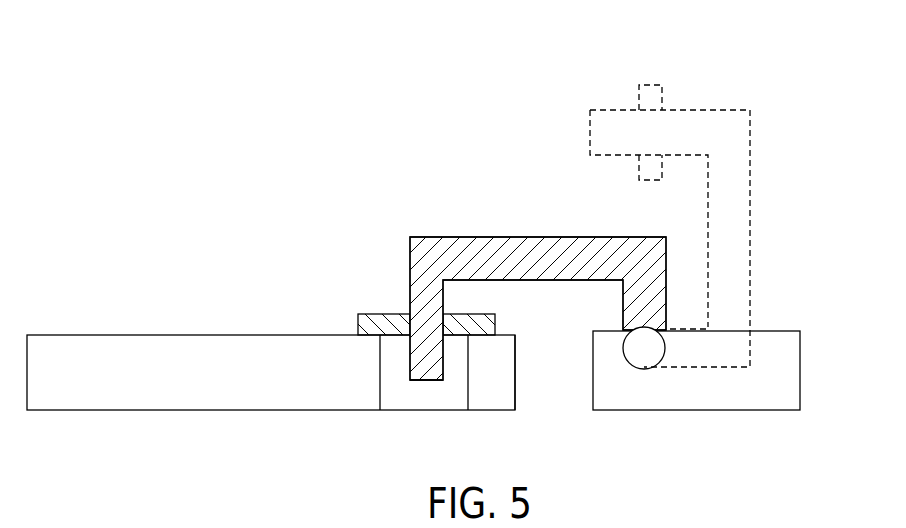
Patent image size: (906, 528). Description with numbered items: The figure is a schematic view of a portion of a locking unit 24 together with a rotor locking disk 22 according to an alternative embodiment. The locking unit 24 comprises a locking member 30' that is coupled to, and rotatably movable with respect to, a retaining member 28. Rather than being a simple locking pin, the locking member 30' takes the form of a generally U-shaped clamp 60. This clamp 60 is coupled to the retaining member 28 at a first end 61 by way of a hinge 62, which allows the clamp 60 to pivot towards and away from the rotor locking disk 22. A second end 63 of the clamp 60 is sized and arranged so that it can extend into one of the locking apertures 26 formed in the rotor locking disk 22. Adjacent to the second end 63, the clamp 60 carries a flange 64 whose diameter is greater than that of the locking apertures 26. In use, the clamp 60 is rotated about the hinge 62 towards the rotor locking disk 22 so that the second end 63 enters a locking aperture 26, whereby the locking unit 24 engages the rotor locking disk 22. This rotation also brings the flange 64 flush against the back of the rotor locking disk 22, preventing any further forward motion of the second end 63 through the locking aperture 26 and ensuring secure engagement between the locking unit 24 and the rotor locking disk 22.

The rotor locking disk 22 is at (98, 346).
The locking unit 24 is at (450, 218).
The locking aperture 26 is at (398, 398).
The retaining member 28 is at (619, 405).
The locking member 30' is at (564, 196).
The clamp 60 is at (495, 237).
The first end 61 is at (678, 317).
The hinge 62 is at (643, 370).
The second end 63 is at (436, 396).
The flange 64 is at (380, 320).